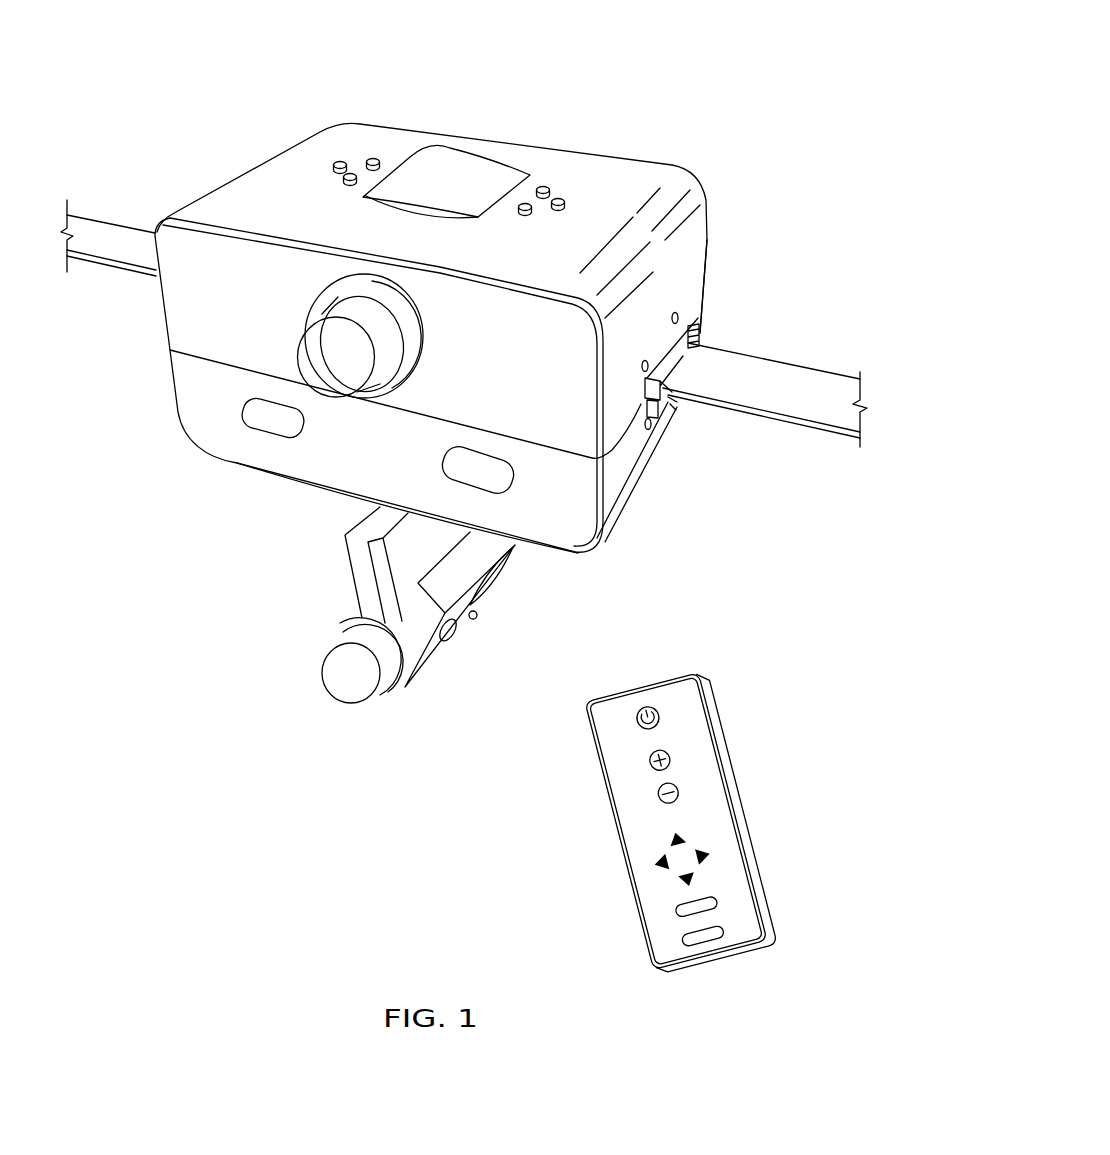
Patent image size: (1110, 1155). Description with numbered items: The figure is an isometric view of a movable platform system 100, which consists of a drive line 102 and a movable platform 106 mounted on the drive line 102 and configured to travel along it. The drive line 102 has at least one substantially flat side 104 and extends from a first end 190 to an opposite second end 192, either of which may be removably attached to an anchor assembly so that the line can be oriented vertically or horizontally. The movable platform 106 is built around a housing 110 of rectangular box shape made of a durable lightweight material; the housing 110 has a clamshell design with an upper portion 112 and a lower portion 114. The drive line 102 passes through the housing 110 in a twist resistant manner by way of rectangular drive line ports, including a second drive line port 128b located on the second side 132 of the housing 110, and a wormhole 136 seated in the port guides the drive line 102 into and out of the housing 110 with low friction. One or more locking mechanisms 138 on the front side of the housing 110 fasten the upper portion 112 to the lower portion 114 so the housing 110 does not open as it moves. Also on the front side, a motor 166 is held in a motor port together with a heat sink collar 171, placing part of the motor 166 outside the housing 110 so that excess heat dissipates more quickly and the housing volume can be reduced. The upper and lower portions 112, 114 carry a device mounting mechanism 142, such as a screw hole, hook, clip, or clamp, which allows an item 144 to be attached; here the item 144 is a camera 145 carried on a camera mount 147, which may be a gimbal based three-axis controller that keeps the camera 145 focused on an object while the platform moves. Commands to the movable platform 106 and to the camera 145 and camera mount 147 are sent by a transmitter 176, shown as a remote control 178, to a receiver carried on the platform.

The movable platform system 100 is at (716, 70).
The drive line 102 is at (776, 391).
The substantially flat side 104 is at (86, 232).
The movable platform 106 is at (638, 152).
The housing 110 is at (262, 186).
The upper portion 112 is at (506, 391).
The lower portion 114 is at (374, 468).
The second drive line port 128b is at (676, 410).
The second side 132 is at (674, 296).
The wormhole 136 is at (700, 344).
The locking mechanism 138 is at (262, 420).
The device mounting mechanism 142 is at (353, 568).
The item 144 is at (437, 667).
The camera 145 is at (482, 604).
The camera mount 147 is at (346, 670).
The motor 166 is at (354, 371).
The heat sink collar 171 is at (322, 299).
The transmitter 176 is at (711, 804).
The remote control 178 is at (722, 808).
The first end 190 is at (78, 268).
The second end 192 is at (840, 442).